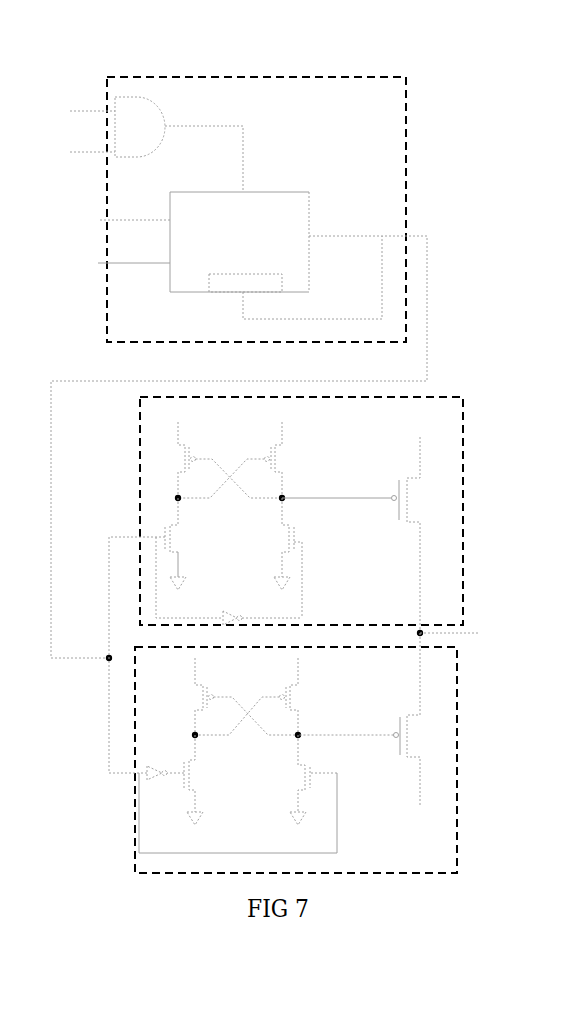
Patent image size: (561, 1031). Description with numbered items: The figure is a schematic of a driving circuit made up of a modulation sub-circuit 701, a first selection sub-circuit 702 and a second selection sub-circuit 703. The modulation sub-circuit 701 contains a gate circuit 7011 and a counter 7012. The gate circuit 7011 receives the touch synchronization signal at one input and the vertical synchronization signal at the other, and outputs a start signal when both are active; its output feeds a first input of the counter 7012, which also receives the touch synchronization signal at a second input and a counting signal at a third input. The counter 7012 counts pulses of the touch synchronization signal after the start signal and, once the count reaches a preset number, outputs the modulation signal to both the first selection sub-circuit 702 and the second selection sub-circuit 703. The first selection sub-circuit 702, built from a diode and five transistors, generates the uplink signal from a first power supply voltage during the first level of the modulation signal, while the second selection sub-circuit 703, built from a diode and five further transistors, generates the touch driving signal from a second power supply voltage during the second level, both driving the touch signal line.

The modulation sub-circuit 701 is at (240, 76).
The gate circuit 7011 is at (162, 111).
The counter 7012 is at (300, 192).
The second selection sub-circuit 703 is at (464, 462).
The first selection sub-circuit 702 is at (458, 712).